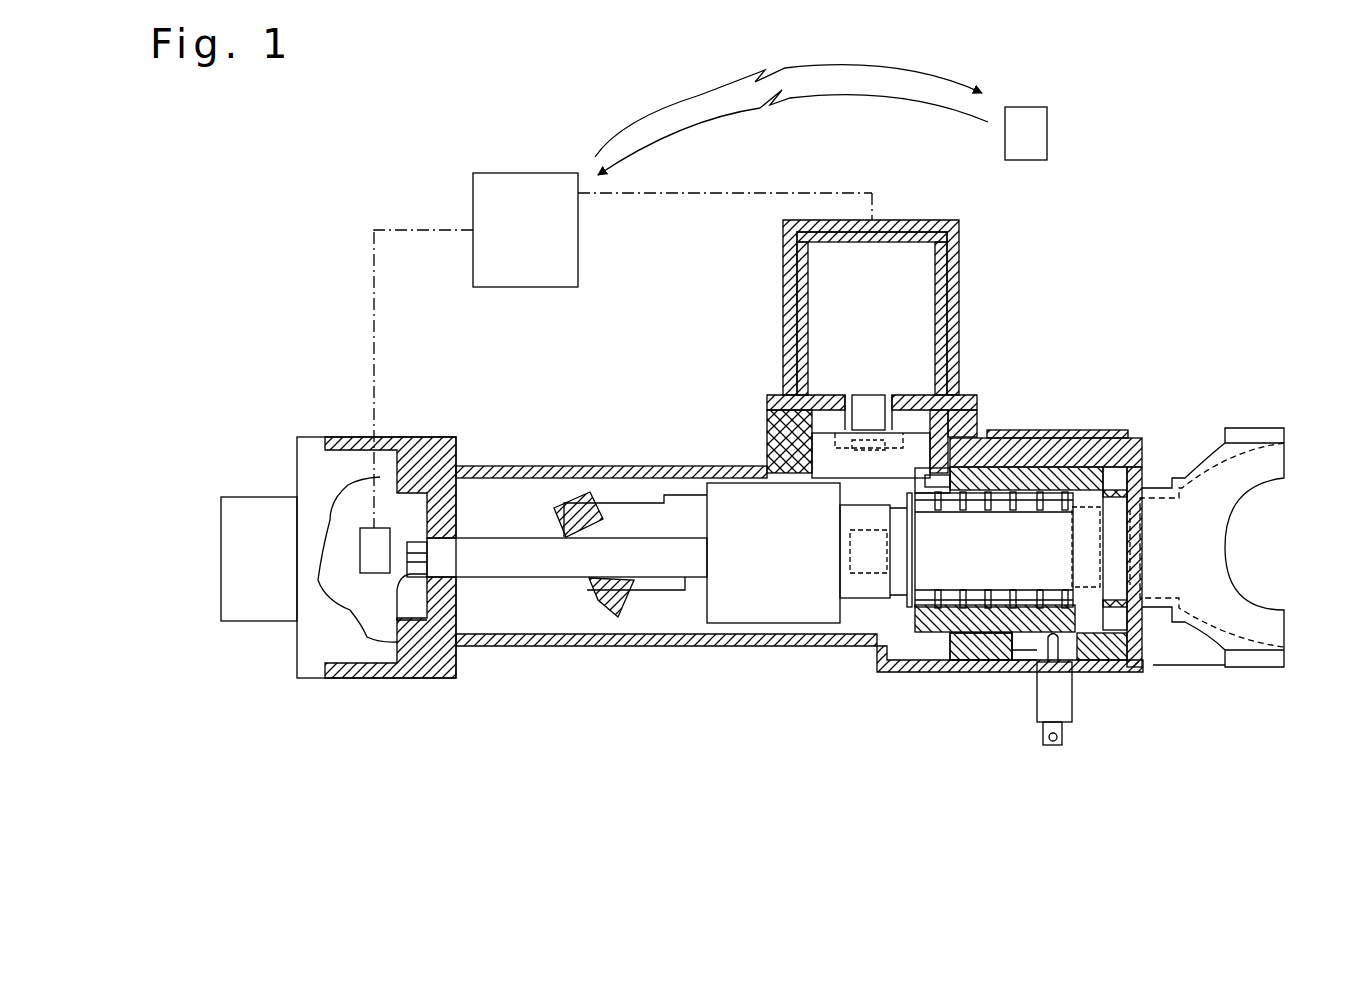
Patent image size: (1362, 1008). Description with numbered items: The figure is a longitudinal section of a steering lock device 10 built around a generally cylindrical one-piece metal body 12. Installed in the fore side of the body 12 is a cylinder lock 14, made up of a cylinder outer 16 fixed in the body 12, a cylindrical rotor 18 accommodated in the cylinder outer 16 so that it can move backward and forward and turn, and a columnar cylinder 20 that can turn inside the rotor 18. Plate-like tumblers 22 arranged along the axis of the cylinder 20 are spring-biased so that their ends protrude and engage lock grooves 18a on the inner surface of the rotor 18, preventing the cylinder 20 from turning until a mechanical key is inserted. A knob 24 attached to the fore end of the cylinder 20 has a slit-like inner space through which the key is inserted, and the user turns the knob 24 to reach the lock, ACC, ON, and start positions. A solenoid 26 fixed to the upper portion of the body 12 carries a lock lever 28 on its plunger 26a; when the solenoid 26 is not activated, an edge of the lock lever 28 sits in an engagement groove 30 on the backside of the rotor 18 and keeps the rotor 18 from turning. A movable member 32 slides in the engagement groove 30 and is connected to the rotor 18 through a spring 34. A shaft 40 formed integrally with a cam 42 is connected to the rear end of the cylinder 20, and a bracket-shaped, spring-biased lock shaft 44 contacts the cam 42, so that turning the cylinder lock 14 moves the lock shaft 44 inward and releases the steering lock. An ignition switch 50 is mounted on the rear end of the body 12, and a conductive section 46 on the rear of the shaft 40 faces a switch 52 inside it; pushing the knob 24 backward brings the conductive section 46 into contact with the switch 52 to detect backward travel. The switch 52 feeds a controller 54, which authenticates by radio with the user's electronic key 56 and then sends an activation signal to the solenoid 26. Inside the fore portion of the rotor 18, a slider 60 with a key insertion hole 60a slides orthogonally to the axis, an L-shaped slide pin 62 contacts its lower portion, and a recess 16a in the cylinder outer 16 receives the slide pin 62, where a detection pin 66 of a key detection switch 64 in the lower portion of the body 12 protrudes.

The steering lock device 10 is at (1101, 224).
The body 12 is at (798, 652).
The cylinder lock 14 is at (1140, 333).
The cylinder outer 16 is at (1017, 440).
The recess 16a is at (1018, 660).
The rotor 18 is at (1058, 445).
The lock grooves 18a is at (995, 662).
The cylinder 20 is at (1097, 435).
The tumblers 22 is at (958, 660).
The knob 24 is at (1284, 445).
The solenoid 26 is at (785, 292).
The plunger 26a is at (870, 405).
The lock lever 28 is at (835, 465).
The engagement groove 30 is at (922, 482).
The movable member 32 is at (932, 430).
The spring 34 is at (987, 437).
The shaft 40 is at (555, 577).
The cam 42 is at (675, 503).
The lock shaft 44 is at (570, 503).
The conductive section 46 is at (402, 618).
The ignition switch 50 is at (300, 650).
The switch 52 is at (372, 528).
The controller 54 is at (473, 213).
The electronic key 56 is at (1047, 140).
The slider 60 is at (1065, 585).
The key insertion hole 60a is at (1095, 570).
The slide pin 62 is at (1140, 667).
The key detection switch 64 is at (1072, 705).
The detection pin 66 is at (1100, 660).